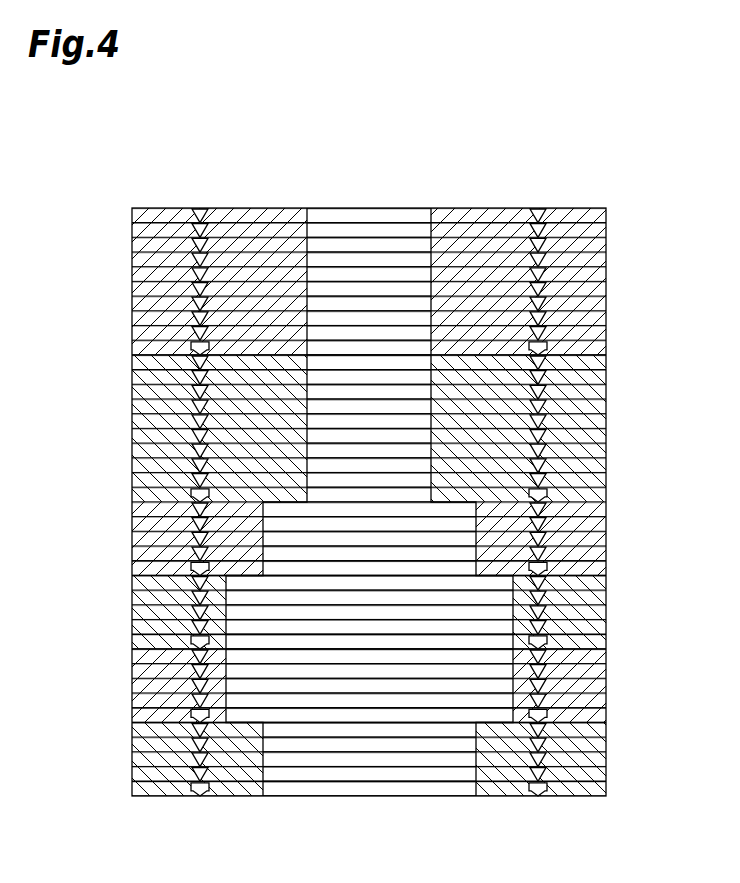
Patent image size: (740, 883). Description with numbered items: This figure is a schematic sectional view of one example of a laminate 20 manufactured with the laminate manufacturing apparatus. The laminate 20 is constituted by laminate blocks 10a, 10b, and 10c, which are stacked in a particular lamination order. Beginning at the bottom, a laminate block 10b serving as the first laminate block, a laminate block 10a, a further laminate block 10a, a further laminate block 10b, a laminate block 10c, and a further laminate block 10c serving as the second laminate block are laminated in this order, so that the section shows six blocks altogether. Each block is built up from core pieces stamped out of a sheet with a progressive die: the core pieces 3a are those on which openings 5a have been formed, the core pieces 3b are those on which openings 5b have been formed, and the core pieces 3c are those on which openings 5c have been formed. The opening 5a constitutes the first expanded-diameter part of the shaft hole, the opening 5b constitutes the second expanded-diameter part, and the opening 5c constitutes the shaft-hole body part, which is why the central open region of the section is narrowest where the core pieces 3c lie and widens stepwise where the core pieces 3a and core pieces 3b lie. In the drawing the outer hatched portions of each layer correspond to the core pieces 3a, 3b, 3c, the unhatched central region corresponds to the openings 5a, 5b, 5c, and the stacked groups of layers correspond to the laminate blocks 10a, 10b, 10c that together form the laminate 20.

The laminate 20 is at (584, 149).
The core piece 3a is at (607, 641).
The core piece 3b is at (607, 569).
The core piece 3c is at (607, 216).
The opening 5a is at (226, 638).
The opening 5b is at (266, 789).
The opening 5c is at (307, 360).
The laminate block 10a is at (132, 614).
The laminate block 10b is at (132, 543).
The laminate block 10c is at (132, 292).